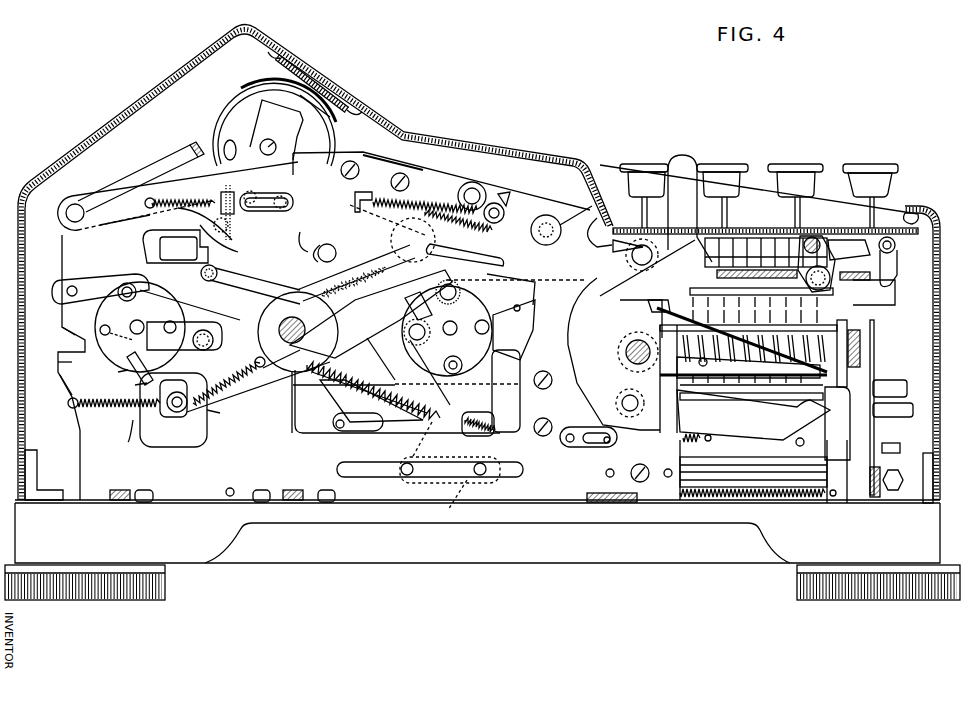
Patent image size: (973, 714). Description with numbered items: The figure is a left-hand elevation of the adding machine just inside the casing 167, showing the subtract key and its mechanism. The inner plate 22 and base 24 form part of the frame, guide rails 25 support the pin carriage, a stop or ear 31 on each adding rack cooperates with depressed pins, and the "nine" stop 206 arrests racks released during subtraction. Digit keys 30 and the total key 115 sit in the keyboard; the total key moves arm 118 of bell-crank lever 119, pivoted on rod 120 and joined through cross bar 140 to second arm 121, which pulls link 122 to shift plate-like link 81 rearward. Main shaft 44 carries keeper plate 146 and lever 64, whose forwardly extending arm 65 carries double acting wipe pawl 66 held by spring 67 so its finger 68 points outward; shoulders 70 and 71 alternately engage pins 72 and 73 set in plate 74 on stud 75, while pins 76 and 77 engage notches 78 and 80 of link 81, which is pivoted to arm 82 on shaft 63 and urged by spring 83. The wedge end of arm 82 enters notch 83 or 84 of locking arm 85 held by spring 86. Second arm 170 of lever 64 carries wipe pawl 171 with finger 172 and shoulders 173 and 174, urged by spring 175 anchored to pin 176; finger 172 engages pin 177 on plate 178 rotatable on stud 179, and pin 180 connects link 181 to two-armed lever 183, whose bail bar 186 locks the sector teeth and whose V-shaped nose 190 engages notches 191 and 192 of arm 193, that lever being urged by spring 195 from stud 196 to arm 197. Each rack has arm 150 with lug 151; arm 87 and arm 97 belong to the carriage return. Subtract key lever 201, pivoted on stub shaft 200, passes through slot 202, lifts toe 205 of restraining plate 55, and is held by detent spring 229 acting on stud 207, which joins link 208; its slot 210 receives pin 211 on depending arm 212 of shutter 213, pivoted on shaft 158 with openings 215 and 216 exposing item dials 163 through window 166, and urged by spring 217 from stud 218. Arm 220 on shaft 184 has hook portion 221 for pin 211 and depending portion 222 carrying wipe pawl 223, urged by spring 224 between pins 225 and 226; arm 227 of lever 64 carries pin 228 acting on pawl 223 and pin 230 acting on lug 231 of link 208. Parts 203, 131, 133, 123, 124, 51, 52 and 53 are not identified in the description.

The casing 167 is at (160, 112).
The item dial 163 is at (240, 110).
The spring 217 is at (212, 120).
The depending arm 212 is at (240, 143).
The shaft 158 is at (274, 143).
The elongated slot 216 is at (315, 68).
The window 166 is at (340, 90).
The dial shield or shutter 213 is at (355, 105).
The elongated slot 215 is at (333, 120).
The forwardly extending arm 220 is at (142, 180).
The two-armed lever 183 is at (112, 188).
The shaft 184 is at (74, 204).
The bail bar 186 is at (190, 200).
The slot 210 is at (256, 193).
The pin 211 is at (293, 168).
The hook portion 221 is at (293, 194).
The spring 224 is at (186, 212).
The pin 225 is at (130, 226).
The depending portion 222 is at (175, 246).
The pin 226 is at (236, 216).
The wipe pawl 223 is at (230, 232).
The depending lug 231 is at (300, 242).
The notch 84 is at (362, 194).
The spring 86 is at (456, 192).
The arm 82 is at (484, 208).
The spring 83 is at (504, 198).
The locking arm 85 is at (327, 244).
The double acting wipe pawl 66 is at (445, 236).
The shaft 63 is at (551, 216).
The link 208 is at (592, 222).
The slot 202 is at (640, 238).
The detent spring 229 is at (675, 242).
The subtract key lever 201 is at (682, 165).
The digit keys 30 is at (785, 165).
The link 122 is at (735, 240).
The cross bar 140 is at (790, 232).
The second arm 121 is at (803, 222).
The arm 118 is at (850, 240).
The total key 115 is at (878, 190).
The hook 203 is at (915, 212).
The pivot 131 is at (896, 241).
The bracket 133 is at (900, 268).
The bell-crank lever 119 is at (822, 260).
The rod 120 is at (808, 266).
The stud 207 is at (654, 255).
The link 181 is at (112, 281).
The pin 180 is at (127, 283).
The pin 228 is at (200, 273).
The arm 227 is at (200, 292).
The stud 218 is at (236, 260).
The keeper plate 146 is at (315, 276).
The pin 230 is at (256, 287).
The lever 64 is at (300, 318).
The spring 67 is at (350, 300).
The shoulder 70 is at (475, 260).
The pin 72 is at (460, 290).
The plate-like link 81 is at (510, 283).
The notch 80 is at (520, 308).
The pin 77 is at (489, 325).
The finger 68 is at (457, 327).
The shoulder 71 is at (418, 306).
The notch 78 is at (425, 334).
The stud 75 is at (455, 334).
The pin 73 is at (462, 365).
The plate 74 is at (494, 354).
The pin 76 is at (416, 342).
The forwardly extending arm 65 is at (400, 336).
The main shaft 44 is at (291, 343).
The guide rails 25 is at (625, 352).
The bracket 123 is at (650, 305).
The rod 124 is at (670, 320).
The restraining plate 55 is at (778, 380).
The toe 205 is at (830, 383).
The stop or ear 31 is at (845, 400).
The arm 97 is at (874, 430).
The nine stop 206 is at (637, 405).
The stub shaft 200 is at (620, 440).
The V-shaped nose 190 is at (60, 316).
The notch 191 is at (58, 342).
The plate 178 is at (158, 312).
The stud 179 is at (125, 344).
The shoulder 174 is at (170, 342).
The spring 175 is at (226, 375).
The pin 177 is at (120, 373).
The finger 172 is at (135, 386).
The shoulder 173 is at (150, 386).
The notch 192 is at (76, 364).
The rearwardly extending arm 193 is at (68, 397).
The stud 196 is at (80, 410).
The wipe pawl 171 is at (165, 410).
The second arm 170 is at (220, 406).
The pin 176 is at (260, 372).
The other arm 197 is at (220, 414).
The downwardly projecting lug 151 is at (292, 418).
The spring 195 is at (128, 439).
The rearwardly extending arm 150 is at (316, 432).
The spring 51 is at (425, 432).
The forwardly extending arm 87 is at (507, 420).
The bar 53 is at (485, 477).
The link 52 is at (450, 508).
The inner plate 22 is at (190, 500).
The base 24 is at (525, 555).